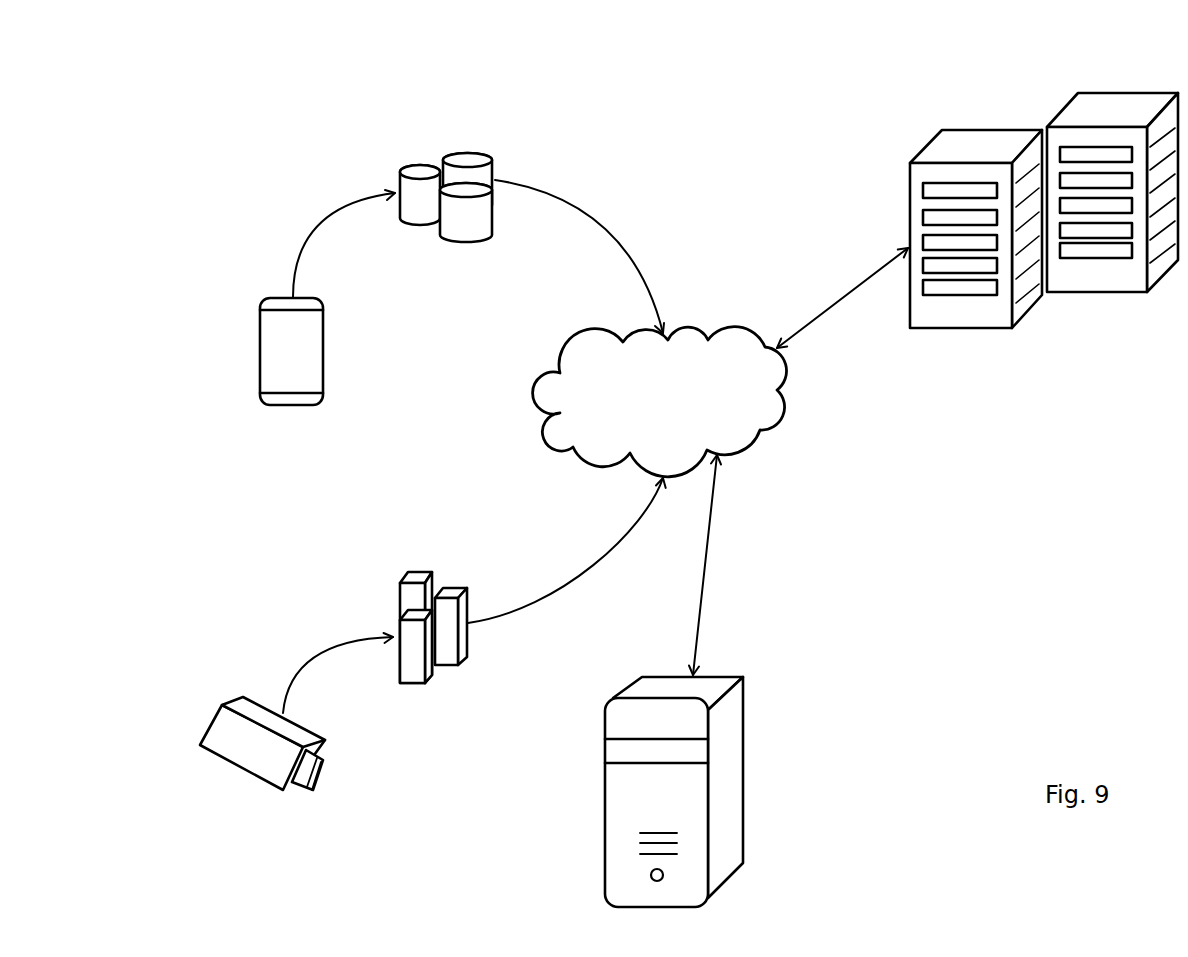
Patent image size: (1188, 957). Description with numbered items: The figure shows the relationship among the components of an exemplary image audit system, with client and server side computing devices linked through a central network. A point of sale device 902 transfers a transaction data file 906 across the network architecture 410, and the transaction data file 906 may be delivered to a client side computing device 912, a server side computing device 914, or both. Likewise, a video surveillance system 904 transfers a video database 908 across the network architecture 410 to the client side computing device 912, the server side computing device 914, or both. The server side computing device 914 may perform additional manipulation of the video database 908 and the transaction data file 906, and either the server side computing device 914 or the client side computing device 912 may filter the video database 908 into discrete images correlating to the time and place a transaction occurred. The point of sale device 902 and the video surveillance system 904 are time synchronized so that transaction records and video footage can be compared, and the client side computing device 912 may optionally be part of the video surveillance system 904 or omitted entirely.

The point of sale device 902 is at (260, 358).
The video surveillance system 904 is at (198, 740).
The transaction data file 906 is at (483, 153).
The video database 908 is at (420, 572).
The network architecture 410 is at (660, 402).
The client side computing device 912 is at (743, 770).
The server side computing device 914 is at (1107, 92).